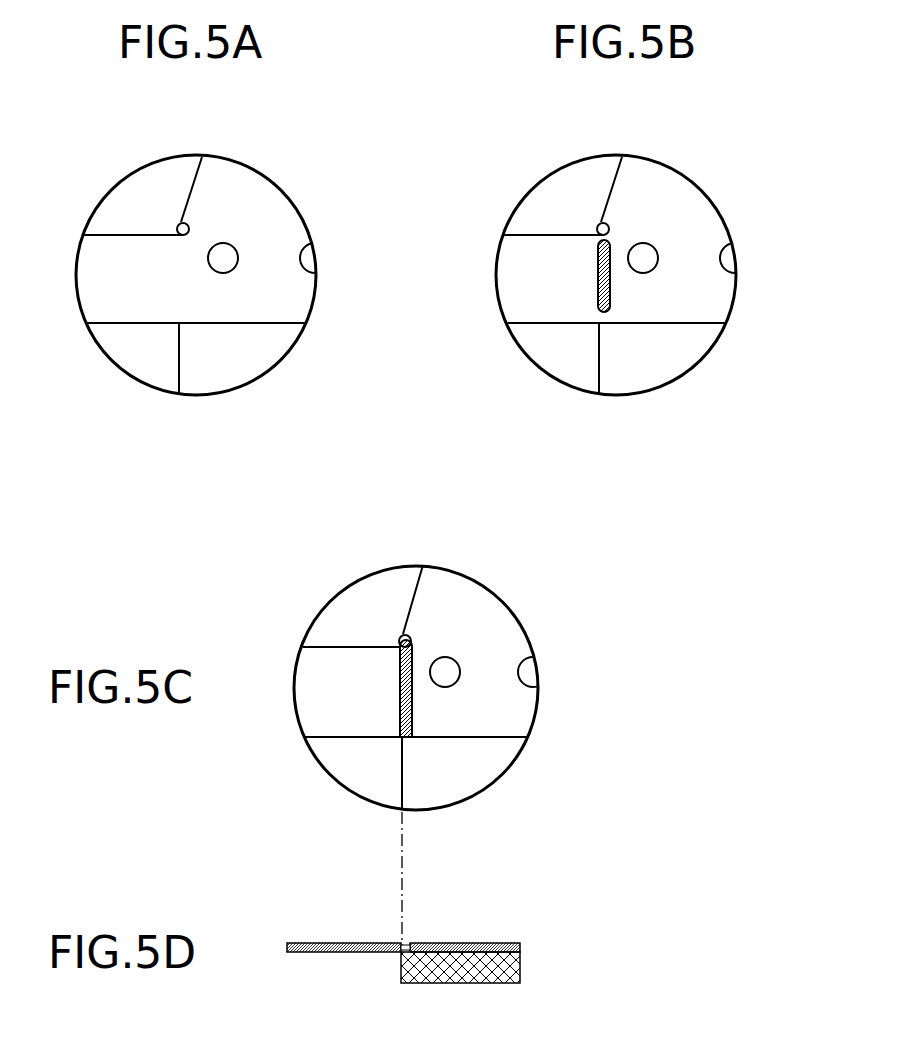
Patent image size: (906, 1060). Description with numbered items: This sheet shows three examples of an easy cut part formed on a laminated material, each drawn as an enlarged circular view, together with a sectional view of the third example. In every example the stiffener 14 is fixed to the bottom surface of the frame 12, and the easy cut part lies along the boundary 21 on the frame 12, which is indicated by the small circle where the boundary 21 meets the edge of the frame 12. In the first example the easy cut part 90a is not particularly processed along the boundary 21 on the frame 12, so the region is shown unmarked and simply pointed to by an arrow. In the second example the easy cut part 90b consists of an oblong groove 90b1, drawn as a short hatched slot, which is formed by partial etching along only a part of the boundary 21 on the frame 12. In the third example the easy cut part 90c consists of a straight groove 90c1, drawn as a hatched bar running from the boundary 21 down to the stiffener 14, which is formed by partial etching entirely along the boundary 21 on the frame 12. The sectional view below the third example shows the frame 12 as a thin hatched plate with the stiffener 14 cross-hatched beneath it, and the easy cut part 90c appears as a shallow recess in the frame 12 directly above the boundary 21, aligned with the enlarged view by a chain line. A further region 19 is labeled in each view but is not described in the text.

In FIG. 5A, the frame 12 is at (137, 257).
In FIG. 5B, the frame 12 is at (567, 263).
In FIG. 5C, the frame 12 is at (370, 677).
In FIG. 5D, the frame 12 is at (348, 943).
In FIG. 5A, the stiffener 14 is at (217, 345).
In FIG. 5B, the stiffener 14 is at (645, 350).
In FIG. 5C, the stiffener 14 is at (450, 763).
In FIG. 5D, the stiffener 14 is at (453, 970).
In FIG. 5A, the plate portion with holes 19 is at (240, 213).
In FIG. 5B, the plate portion with holes 19 is at (670, 222).
In FIG. 5C, the plate portion with holes 19 is at (473, 635).
In FIG. 5D, the plate portion with holes 19 is at (460, 943).
In FIG. 5A, the boundary 21 is at (178, 247).
In FIG. 5B, the boundary 21 is at (602, 228).
In FIG. 5C, the boundary 21 is at (402, 638).
In FIG. 5D, the boundary 21 is at (400, 952).
In FIG. 5A, the easy cut part 90a is at (175, 280).
In FIG. 5B, the easy cut part 90b is at (593, 287).
In FIG. 5B, the oblong groove 90b1 is at (610, 288).
In FIG. 5C, the easy cut part 90c is at (393, 703).
In FIG. 5D, the easy cut part 90c is at (408, 943).
In FIG. 5C, the straight groove 90c1 is at (412, 708).